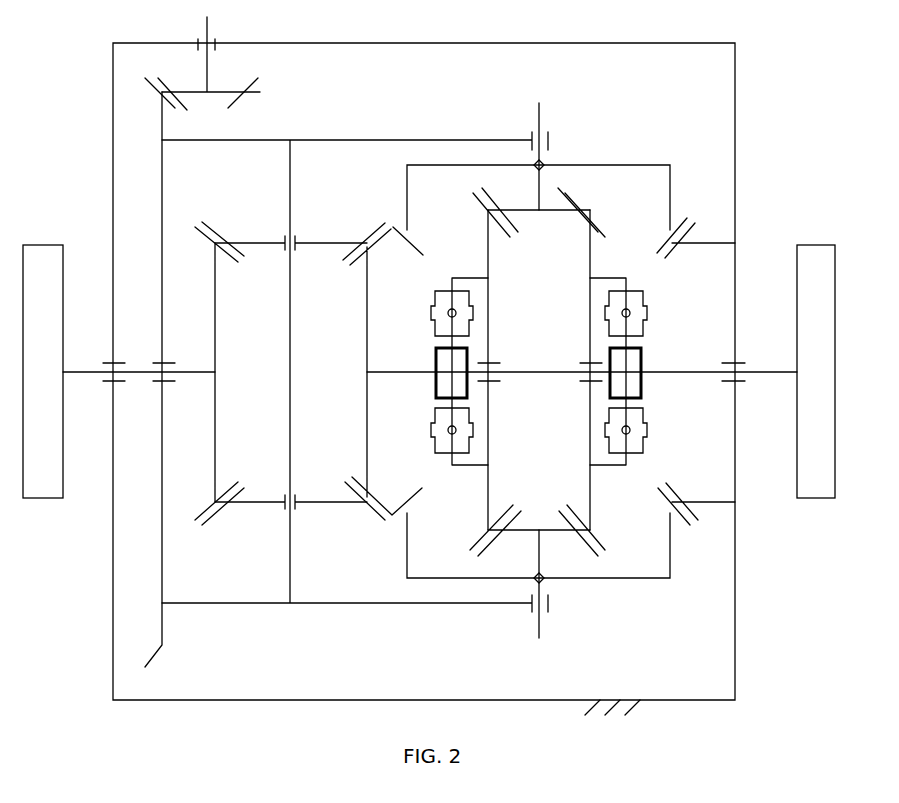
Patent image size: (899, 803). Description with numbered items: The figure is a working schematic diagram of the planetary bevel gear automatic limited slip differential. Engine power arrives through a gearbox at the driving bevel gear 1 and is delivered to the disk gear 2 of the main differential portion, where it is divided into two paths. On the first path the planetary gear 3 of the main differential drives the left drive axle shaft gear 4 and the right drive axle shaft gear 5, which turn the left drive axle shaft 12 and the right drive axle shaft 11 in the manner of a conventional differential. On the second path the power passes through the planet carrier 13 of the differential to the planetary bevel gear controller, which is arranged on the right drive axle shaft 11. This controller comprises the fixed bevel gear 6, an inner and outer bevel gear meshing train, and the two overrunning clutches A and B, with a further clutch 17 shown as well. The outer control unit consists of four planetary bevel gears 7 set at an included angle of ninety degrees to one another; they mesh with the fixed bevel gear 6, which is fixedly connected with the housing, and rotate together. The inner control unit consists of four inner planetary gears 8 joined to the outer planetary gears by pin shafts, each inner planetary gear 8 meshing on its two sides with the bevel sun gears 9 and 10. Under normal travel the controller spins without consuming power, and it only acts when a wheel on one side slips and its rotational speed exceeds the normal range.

The driving bevel gear 1 is at (211, 54).
The disk gear 2 is at (424, 379).
The planetary gear 3 is at (291, 359).
The left drive axle shaft gear 4 is at (219, 373).
The right drive axle shaft gear 5 is at (383, 371).
The fixed bevel gear 6 is at (696, 371).
The planetary bevel gear 7 is at (538, 370).
The inner planetary gear 8 is at (537, 372).
The bevel sun gear 9 is at (499, 370).
The bevel sun gear 10 is at (575, 370).
The right drive axle shaft 11 is at (429, 371).
The left drive axle shaft 12 is at (154, 365).
The planet carrier 13 is at (355, 364).
The further clutch 17 is at (538, 370).
The overrunning clutch A is at (448, 371).
The overrunning clutch B is at (628, 371).